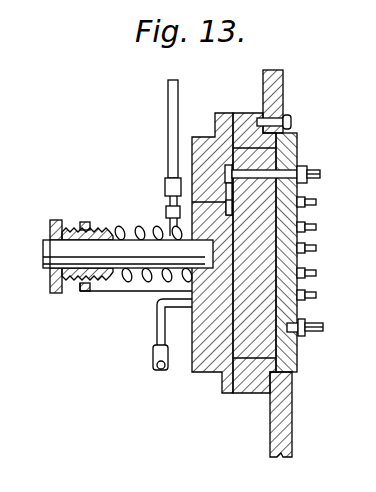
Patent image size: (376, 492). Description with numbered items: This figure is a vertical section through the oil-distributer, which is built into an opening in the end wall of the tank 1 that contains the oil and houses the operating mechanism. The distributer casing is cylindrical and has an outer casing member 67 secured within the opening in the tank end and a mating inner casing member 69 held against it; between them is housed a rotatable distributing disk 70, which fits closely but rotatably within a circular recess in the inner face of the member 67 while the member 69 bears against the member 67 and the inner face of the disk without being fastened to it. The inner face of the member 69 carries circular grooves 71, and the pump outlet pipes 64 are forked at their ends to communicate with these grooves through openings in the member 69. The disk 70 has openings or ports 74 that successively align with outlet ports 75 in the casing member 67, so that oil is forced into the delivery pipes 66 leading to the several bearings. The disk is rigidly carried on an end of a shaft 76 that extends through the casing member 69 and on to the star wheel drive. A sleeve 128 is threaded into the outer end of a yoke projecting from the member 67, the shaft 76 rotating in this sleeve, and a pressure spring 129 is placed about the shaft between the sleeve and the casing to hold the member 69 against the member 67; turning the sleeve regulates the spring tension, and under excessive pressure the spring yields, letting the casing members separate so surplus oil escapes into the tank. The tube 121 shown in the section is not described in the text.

The tank 1 is at (292, 436).
The outlet pipes 64 is at (168, 103).
The delivery pipes 66 is at (307, 192).
The casing member 67 is at (293, 362).
The mating casing member 69 is at (198, 373).
The distributing disk 70 is at (245, 395).
The circular grooves 71 is at (225, 170).
The openings or ports 74 is at (250, 146).
The outlet ports 75 is at (282, 155).
The shaft 76 is at (92, 284).
The tube 121 is at (133, 291).
The sleeve 128 is at (68, 222).
The pressure spring 129 is at (140, 226).